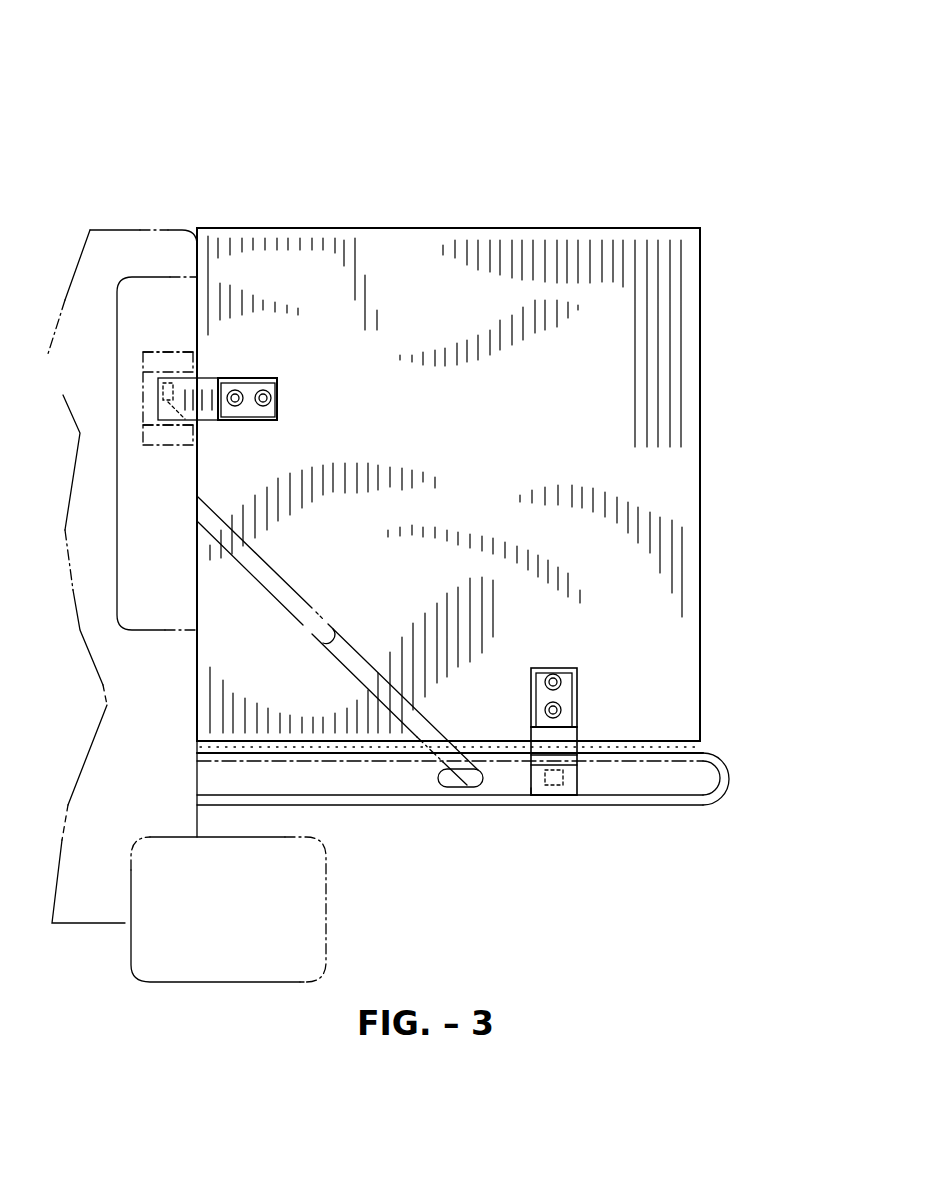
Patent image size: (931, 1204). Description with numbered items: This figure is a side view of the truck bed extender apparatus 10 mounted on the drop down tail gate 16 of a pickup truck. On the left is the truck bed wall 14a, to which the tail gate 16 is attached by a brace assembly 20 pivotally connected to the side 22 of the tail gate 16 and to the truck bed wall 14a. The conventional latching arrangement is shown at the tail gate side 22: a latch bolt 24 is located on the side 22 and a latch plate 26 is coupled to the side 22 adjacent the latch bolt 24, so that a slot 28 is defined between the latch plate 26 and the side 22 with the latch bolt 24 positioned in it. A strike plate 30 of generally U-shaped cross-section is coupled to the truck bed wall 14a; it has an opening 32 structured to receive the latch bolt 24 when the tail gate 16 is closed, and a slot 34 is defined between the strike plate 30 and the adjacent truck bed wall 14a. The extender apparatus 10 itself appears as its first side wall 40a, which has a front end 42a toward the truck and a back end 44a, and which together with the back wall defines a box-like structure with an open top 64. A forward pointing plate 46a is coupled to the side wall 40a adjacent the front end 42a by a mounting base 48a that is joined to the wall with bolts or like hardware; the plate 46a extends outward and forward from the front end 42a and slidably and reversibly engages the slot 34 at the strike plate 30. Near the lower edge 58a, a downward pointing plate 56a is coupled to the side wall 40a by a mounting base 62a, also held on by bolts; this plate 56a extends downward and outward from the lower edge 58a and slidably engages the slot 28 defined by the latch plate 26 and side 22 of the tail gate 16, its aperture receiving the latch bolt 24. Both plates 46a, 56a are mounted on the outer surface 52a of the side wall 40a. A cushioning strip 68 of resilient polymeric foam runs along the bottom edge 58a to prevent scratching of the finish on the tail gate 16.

The truck bed extender apparatus 10 is at (255, 78).
The truck bed wall 14a is at (127, 238).
The tail gate 16 is at (728, 795).
The brace assembly 20 is at (325, 618).
The side of tail gate 22 is at (670, 782).
The latch bolt 24 is at (575, 797).
The latch plate 26 is at (542, 792).
The slot 28 is at (585, 768).
The strike plate 30 is at (145, 356).
The opening 32 is at (196, 433).
The slot 34 is at (132, 393).
The first side wall 40a is at (390, 227).
The front end 42a is at (182, 557).
The back end 44a is at (714, 272).
The forward pointing plate 46a is at (197, 390).
The mounting base 48a is at (255, 386).
The outer surface 52a is at (463, 421).
The downward pointing plate 56a is at (585, 750).
The lower edge 58a is at (380, 747).
The mounting base 62a is at (565, 698).
The open top 64 is at (318, 210).
The cushioning strip 68 is at (695, 748).